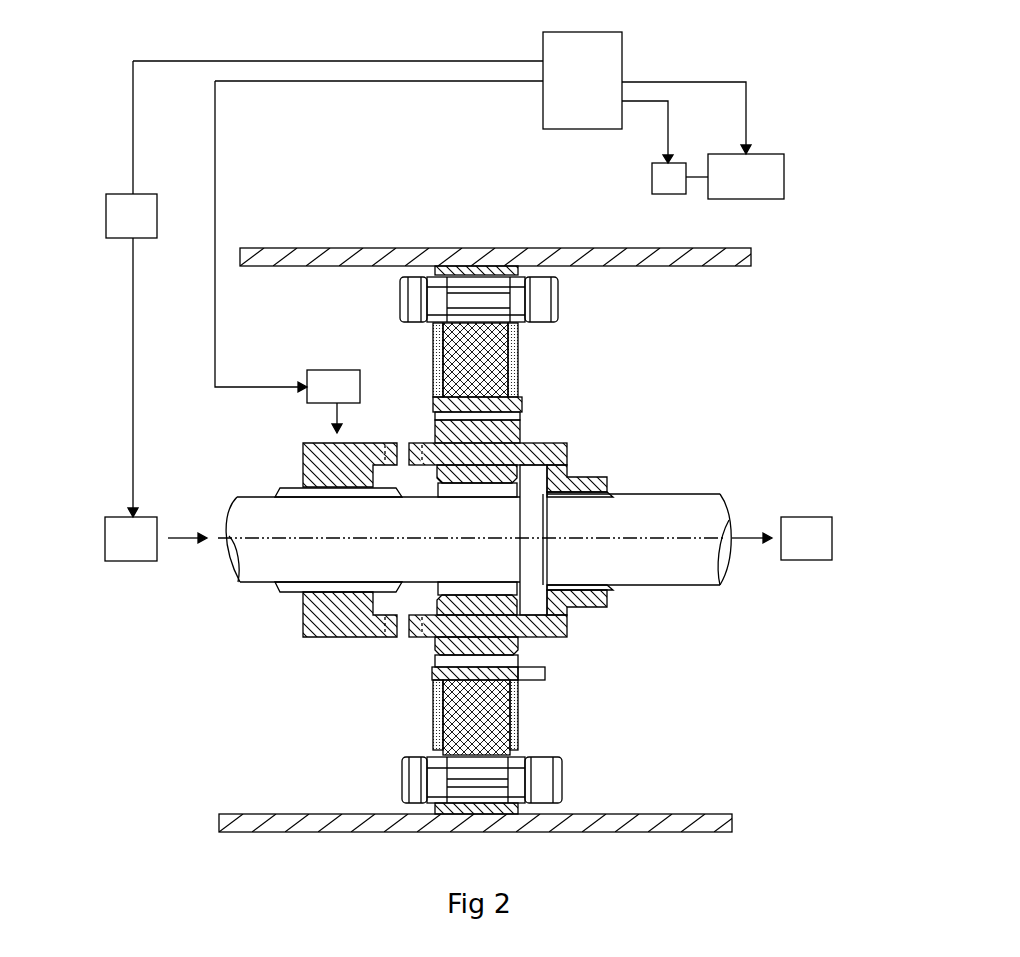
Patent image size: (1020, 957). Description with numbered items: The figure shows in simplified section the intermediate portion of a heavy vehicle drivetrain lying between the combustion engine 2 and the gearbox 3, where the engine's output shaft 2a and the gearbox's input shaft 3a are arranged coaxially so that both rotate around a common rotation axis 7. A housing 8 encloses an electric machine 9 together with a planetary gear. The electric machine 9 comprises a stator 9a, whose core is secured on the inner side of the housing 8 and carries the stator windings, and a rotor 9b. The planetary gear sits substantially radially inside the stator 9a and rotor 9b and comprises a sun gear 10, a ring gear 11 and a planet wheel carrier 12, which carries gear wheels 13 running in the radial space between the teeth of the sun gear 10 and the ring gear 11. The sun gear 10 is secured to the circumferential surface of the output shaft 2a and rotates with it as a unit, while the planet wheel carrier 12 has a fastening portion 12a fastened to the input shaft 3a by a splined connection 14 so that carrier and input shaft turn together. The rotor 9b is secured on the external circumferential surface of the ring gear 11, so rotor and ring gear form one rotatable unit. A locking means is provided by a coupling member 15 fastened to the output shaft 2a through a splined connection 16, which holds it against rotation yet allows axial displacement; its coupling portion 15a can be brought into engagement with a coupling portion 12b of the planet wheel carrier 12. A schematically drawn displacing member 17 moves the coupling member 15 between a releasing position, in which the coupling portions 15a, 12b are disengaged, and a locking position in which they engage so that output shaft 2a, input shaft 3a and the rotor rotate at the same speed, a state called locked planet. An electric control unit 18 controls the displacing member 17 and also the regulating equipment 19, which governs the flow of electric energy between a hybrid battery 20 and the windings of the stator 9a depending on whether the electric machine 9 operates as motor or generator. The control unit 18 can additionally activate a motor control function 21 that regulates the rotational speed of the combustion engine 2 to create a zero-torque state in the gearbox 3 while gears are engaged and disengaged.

The combustion engine 2 is at (133, 543).
The output shaft 2a is at (263, 562).
The gearbox 3 is at (809, 543).
The input shaft 3a is at (670, 563).
The rotation axis 7 is at (675, 538).
The housing 8 is at (322, 815).
The electric machine 9 is at (470, 305).
The stator 9a is at (543, 310).
The rotor 9b is at (462, 355).
The sun gear 10 is at (462, 488).
The ring gear 11 is at (462, 407).
The planet wheel carrier 12 is at (538, 626).
The fastening portion 12a is at (582, 598).
The coupling portion 12b is at (410, 636).
The gear wheels 13 is at (470, 432).
The splined connection 14 is at (595, 588).
The coupling member 15 is at (322, 475).
The coupling portion 15a is at (392, 627).
The splined connection 16 is at (312, 493).
The displacing member 17 is at (335, 377).
The control unit 18 is at (598, 92).
The regulating equipment 19 is at (666, 177).
The hybrid battery 20 is at (755, 177).
The motor control function 21 is at (133, 213).